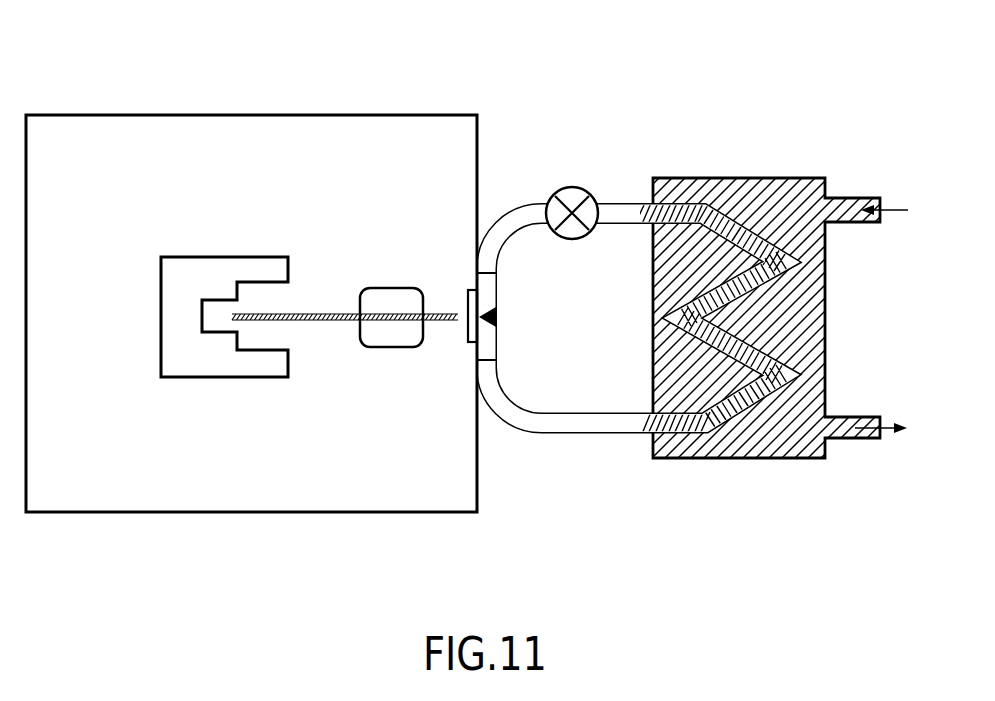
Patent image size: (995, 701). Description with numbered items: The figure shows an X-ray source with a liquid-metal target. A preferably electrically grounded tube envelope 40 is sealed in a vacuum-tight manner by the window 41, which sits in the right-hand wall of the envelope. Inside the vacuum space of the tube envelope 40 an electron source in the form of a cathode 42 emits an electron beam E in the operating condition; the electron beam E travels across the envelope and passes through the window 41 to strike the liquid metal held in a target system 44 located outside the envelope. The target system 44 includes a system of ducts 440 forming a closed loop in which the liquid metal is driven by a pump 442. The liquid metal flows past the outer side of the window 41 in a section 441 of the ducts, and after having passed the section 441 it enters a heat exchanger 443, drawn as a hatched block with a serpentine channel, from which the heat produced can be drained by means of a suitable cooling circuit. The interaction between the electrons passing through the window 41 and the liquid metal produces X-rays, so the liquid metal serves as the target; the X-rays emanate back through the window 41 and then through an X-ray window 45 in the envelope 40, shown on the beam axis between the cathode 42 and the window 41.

The tube envelope 40 is at (393, 112).
The window 41 is at (468, 293).
The cathode 42 is at (160, 303).
The electron beam E is at (338, 312).
The X-ray window 45 is at (397, 343).
The target system 44 is at (617, 323).
The system of ducts 440 is at (622, 212).
The section 441 is at (492, 342).
The pump 442 is at (568, 187).
The heat exchanger 443 is at (813, 300).